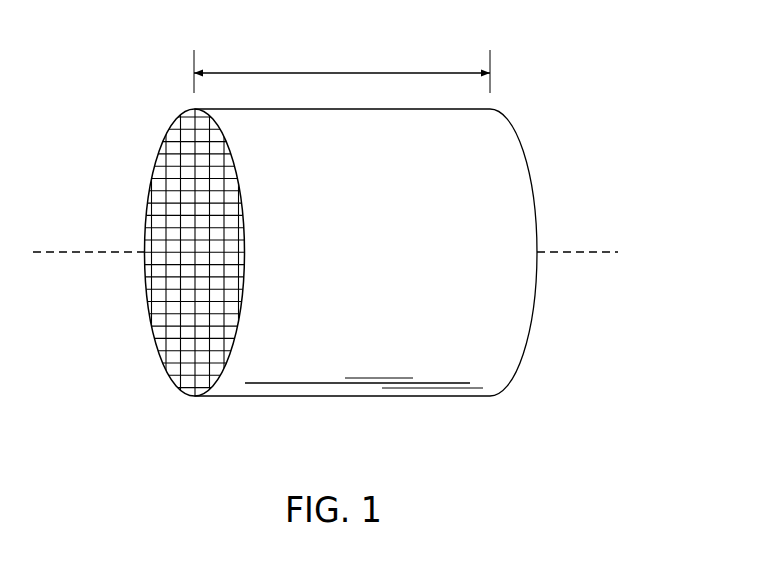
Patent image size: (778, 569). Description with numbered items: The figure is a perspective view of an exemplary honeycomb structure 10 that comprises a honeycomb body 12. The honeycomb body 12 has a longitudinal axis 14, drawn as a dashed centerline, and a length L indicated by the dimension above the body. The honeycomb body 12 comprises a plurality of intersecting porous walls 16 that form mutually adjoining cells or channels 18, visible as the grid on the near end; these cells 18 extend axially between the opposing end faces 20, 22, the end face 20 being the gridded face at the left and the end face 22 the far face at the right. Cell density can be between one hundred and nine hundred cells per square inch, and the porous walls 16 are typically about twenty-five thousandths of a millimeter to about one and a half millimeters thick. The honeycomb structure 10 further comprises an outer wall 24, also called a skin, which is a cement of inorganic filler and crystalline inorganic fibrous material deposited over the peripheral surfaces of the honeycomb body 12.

The honeycomb structure 10 is at (612, 98).
The honeycomb body 12 is at (243, 398).
The longitudinal axis 14 is at (98, 252).
The porous walls 16 is at (173, 148).
The cells 18 is at (173, 167).
The end face 20 is at (152, 333).
The end face 22 is at (537, 302).
The outer wall 24 is at (512, 202).